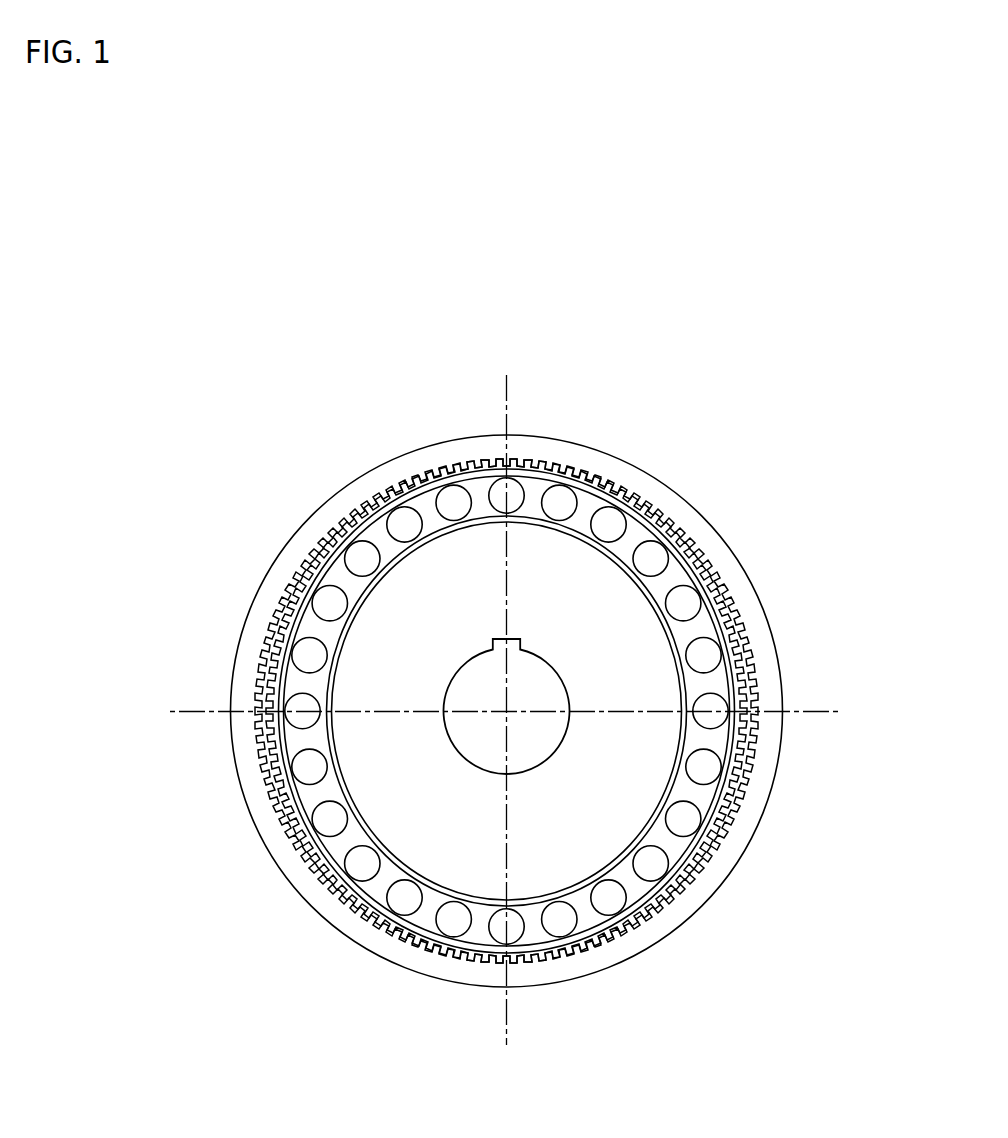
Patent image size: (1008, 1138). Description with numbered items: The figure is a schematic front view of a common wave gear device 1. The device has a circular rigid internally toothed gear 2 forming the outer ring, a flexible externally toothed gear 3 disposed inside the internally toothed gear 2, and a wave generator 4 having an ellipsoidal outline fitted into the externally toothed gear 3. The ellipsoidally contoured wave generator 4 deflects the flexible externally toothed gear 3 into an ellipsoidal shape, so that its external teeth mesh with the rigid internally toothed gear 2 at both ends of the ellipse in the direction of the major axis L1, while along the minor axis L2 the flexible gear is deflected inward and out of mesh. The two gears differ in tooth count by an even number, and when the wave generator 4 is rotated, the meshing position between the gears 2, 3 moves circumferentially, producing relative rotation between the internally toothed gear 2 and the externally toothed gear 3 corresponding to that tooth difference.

The wave gear device 1 is at (529, 686).
The rigid internally toothed gear 2 is at (742, 588).
The flexible externally toothed gear 3 is at (757, 642).
The wave generator 4 is at (670, 734).
The major axis L1 is at (507, 592).
The minor axis L2 is at (385, 712).